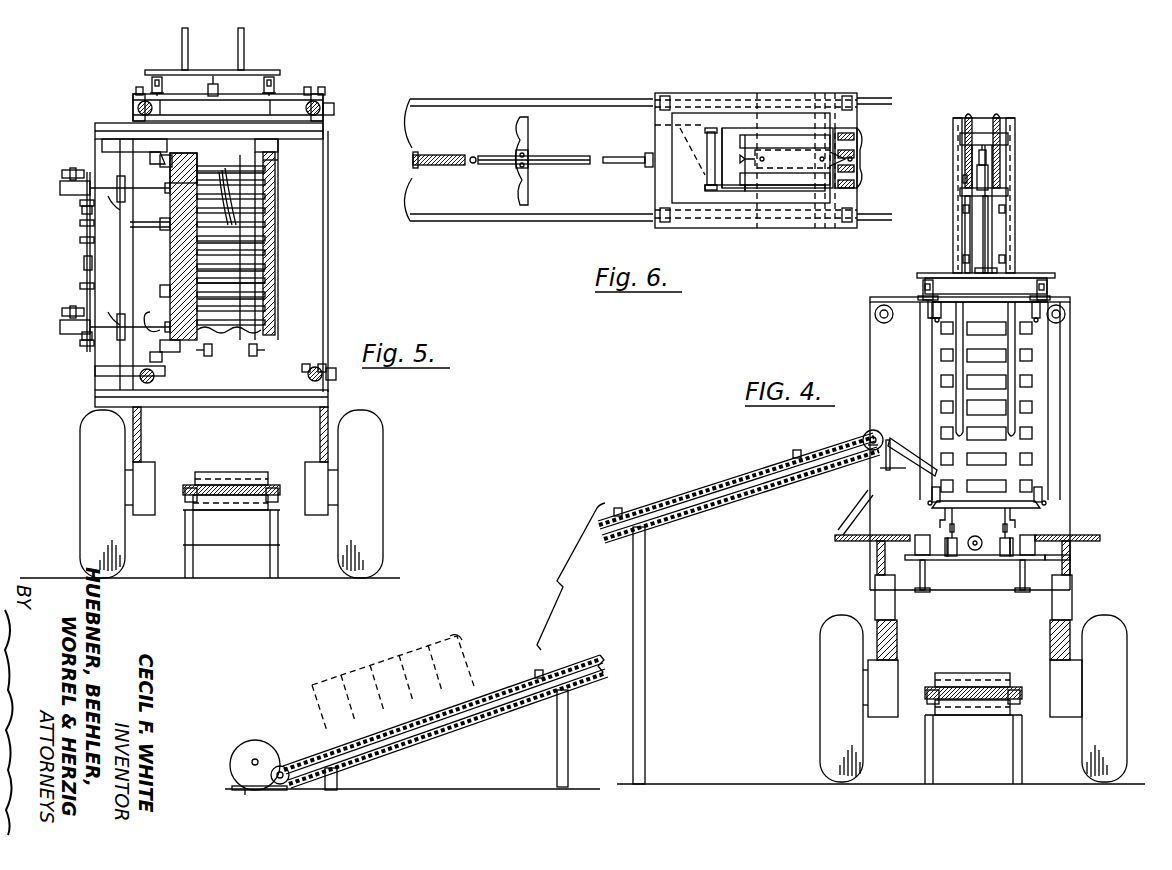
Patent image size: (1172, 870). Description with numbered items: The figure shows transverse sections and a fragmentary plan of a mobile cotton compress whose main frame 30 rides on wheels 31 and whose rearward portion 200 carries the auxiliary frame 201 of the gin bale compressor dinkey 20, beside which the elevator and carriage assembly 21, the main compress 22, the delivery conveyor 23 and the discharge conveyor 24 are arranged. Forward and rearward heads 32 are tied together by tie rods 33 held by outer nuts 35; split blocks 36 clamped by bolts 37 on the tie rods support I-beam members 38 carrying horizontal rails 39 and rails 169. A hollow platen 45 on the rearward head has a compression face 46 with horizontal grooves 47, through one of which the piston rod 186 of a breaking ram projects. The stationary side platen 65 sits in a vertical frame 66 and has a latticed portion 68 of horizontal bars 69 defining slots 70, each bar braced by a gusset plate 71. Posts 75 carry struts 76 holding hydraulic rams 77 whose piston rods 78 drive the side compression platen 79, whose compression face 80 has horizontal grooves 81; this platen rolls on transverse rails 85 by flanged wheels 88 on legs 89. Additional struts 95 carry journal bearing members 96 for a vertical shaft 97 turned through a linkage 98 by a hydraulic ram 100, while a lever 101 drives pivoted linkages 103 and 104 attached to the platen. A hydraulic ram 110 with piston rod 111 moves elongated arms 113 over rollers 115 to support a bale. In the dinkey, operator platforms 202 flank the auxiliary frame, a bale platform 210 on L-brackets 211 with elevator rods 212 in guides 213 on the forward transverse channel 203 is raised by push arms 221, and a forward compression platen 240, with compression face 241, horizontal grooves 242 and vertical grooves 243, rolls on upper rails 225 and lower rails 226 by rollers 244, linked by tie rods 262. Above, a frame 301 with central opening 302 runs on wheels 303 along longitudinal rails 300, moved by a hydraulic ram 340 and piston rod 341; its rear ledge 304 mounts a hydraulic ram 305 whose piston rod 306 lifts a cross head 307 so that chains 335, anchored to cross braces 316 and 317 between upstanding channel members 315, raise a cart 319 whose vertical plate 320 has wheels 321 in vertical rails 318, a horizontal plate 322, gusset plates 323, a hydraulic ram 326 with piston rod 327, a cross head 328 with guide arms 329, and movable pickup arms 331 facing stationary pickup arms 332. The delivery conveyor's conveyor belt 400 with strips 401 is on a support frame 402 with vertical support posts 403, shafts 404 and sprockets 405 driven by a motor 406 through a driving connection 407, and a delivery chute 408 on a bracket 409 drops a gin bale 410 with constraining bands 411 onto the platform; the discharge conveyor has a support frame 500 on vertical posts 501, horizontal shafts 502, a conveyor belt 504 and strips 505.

In FIG. 4, the gin bale compressor dinkey 20 is at (872, 376).
In FIG. 6, the elevator and carriage assembly 21 is at (855, 84).
In FIG. 4, the elevator and carriage assembly 21 is at (943, 143).
In FIG. 5, the main or principal compress 22 is at (297, 265).
In FIG. 4, the delivery conveyor 23 is at (614, 491).
In FIG. 5, the discharge conveyor 24 is at (175, 554).
In FIG. 4, the discharge conveyor 24 is at (998, 676).
In FIG. 5, the main frame 30 is at (141, 440).
In FIG. 4, the main frame 30 is at (880, 640).
In FIG. 5, the wheels 31 is at (90, 476).
In FIG. 4, the wheels 31 is at (832, 662).
In FIG. 5, the forward and rearward heads 32 is at (328, 232).
In FIG. 6, the forward and rearward heads 32 is at (525, 190).
In FIG. 4, the forward and rearward heads 32 is at (1072, 397).
In FIG. 5, the tie rods 33 is at (140, 105).
In FIG. 4, the tie rods 33 is at (875, 315).
In FIG. 4, the outer nuts 35 is at (878, 322).
In FIG. 5, the split blocks 36 is at (135, 97).
In FIG. 5, the bolts 37 is at (140, 88).
In FIG. 5, the I-beam members 38 is at (125, 128).
In FIG. 5, the horizontal rails 39 is at (165, 108).
In FIG. 5, the platen 45 is at (275, 182).
In FIG. 5, the compression face 46 is at (266, 268).
In FIG. 5, the horizontal grooves 47 is at (226, 187).
In FIG. 5, the stationary side platen 65 is at (292, 201).
In FIG. 5, the vertical frame 66 is at (282, 332).
In FIG. 5, the latticed portion 68 is at (265, 282).
In FIG. 5, the horizontal bars 69 is at (276, 222).
In FIG. 5, the slots 70 is at (276, 250).
In FIG. 5, the gusset plate 71 is at (275, 166).
In FIG. 5, the posts 75 is at (87, 262).
In FIG. 5, the struts 76 is at (110, 180).
In FIG. 5, the hydraulic rams 77 is at (60, 188).
In FIG. 5, the piston rods 78 is at (150, 189).
In FIG. 5, the side compression platen 79 is at (180, 152).
In FIG. 5, the compression face 80 is at (200, 160).
In FIG. 5, the horizontal grooves 81 is at (170, 282).
In FIG. 5, the transverse horizontal rails 85 is at (110, 146).
In FIG. 5, the flanged wheels 88 is at (150, 156).
In FIG. 5, the legs 89 is at (165, 160).
In FIG. 5, the additional struts 95 is at (80, 202).
In FIG. 5, the journal bearing members 96 is at (84, 208).
In FIG. 5, the vertical shaft 97 is at (85, 266).
In FIG. 5, the linkage 98 is at (65, 172).
In FIG. 5, the hydraulic ram 100 is at (72, 168).
In FIG. 5, the lever 101 is at (82, 222).
In FIG. 5, the pivoted linkage 103 is at (155, 330).
In FIG. 5, the pivoted linkage 104 is at (160, 272).
In FIG. 4, the hydraulic ram 110 is at (948, 542).
In FIG. 4, the piston rod 111 is at (1002, 546).
In FIG. 5, the elongated arms 113 is at (210, 352).
In FIG. 4, the elongated arms 113 is at (953, 557).
In FIG. 5, the rollers 115 is at (252, 356).
In FIG. 4, the rollers 115 is at (1007, 558).
In FIG. 5, the rails 169 is at (333, 110).
In FIG. 5, the piston rod 186 is at (276, 302).
In FIG. 4, the upwardly rearwardly extending portion 200 is at (877, 590).
In FIG. 4, the auxiliary frame 201 is at (905, 558).
In FIG. 4, the operator platforms 202 is at (1090, 535).
In FIG. 4, the forward transverse channel 203 is at (1068, 560).
In FIG. 4, the bale platform 210 is at (990, 499).
In FIG. 4, the L-brackets 211 is at (945, 517).
In FIG. 4, the elevator rods 212 is at (923, 592).
In FIG. 4, the guides 213 is at (915, 545).
In FIG. 4, the push arms 221 is at (988, 528).
In FIG. 4, the upper rails 225 is at (935, 298).
In FIG. 4, the lower rails 226 is at (985, 481).
In FIG. 4, the forward compression platen 240 is at (924, 352).
In FIG. 4, the compression face 241 is at (940, 383).
In FIG. 4, the horizontal grooves 242 is at (1025, 388).
In FIG. 4, the vertical grooves 243 is at (1035, 450).
In FIG. 4, the rollers 244 is at (930, 333).
In FIG. 4, the tie rods 262 is at (930, 307).
In FIG. 5, the longitudinal rails 300 is at (155, 85).
In FIG. 6, the longitudinal rails 300 is at (432, 191).
In FIG. 4, the longitudinal rails 300 is at (920, 298).
In FIG. 5, the frame 301 is at (272, 78).
In FIG. 6, the frame 301 is at (695, 93).
In FIG. 4, the frame 301 is at (925, 278).
In FIG. 6, the central opening 302 is at (728, 118).
In FIG. 5, the wheels 303 is at (160, 80).
In FIG. 6, the wheels 303 is at (665, 95).
In FIG. 4, the wheels 303 is at (925, 296).
In FIG. 4, the rear ledge 304 is at (1030, 274).
In FIG. 4, the hydraulic ram 305 is at (990, 201).
In FIG. 4, the piston rod 306 is at (990, 152).
In FIG. 6, the cross head 307 is at (858, 170).
In FIG. 4, the cross head 307 is at (996, 118).
In FIG. 5, the upstanding channel members 315 is at (243, 33).
In FIG. 6, the upstanding channel members 315 is at (858, 112).
In FIG. 4, the upstanding channel members 315 is at (955, 126).
In FIG. 6, the cross brace 316 is at (858, 176).
In FIG. 4, the cross brace 316 is at (1010, 138).
In FIG. 4, the cross brace 317 is at (1010, 192).
In FIG. 4, the vertical rails 318 is at (962, 178).
In FIG. 6, the cart 319 is at (801, 196).
In FIG. 4, the cart 319 is at (1003, 234).
In FIG. 6, the vertical plate 320 is at (832, 150).
In FIG. 4, the vertical plate 320 is at (965, 200).
In FIG. 4, the wheels 321 is at (958, 258).
In FIG. 6, the horizontal plate 322 is at (800, 125).
In FIG. 6, the gusset plates 323 is at (742, 188).
In FIG. 6, the hydraulic ram 326 is at (762, 212).
In FIG. 6, the piston rod 327 is at (725, 212).
In FIG. 6, the cross head 328 is at (707, 160).
In FIG. 6, the guide arms 329 is at (770, 130).
In FIG. 6, the movable pickup arms 331 is at (655, 125).
In FIG. 4, the movable pickup arms 331 is at (1018, 420).
In FIG. 6, the stationary pickup arms 332 is at (818, 130).
In FIG. 6, the chains 335 is at (792, 159).
In FIG. 4, the chains 335 is at (990, 156).
In FIG. 6, the hydraulic ram 340 is at (445, 156).
In FIG. 5, the piston rod 341 is at (215, 84).
In FIG. 6, the piston rod 341 is at (572, 157).
In FIG. 4, the conveyor belt 400 is at (724, 512).
In FIG. 4, the strips 401 is at (620, 510).
In FIG. 4, the support frame 402 is at (665, 520).
In FIG. 4, the vertical support posts 403 is at (645, 660).
In FIG. 4, the shafts 404 is at (866, 430).
In FIG. 4, the rollers or sprockets 405 is at (862, 440).
In FIG. 4, the motor 406 is at (250, 748).
In FIG. 4, the drive base 407 is at (240, 770).
In FIG. 4, the delivery chute 408 is at (905, 450).
In FIG. 4, the bracket 409 is at (888, 440).
In FIG. 4, the gin bale 410 is at (440, 642).
In FIG. 4, the constraining bands 411 is at (390, 658).
In FIG. 5, the support frame 500 is at (185, 488).
In FIG. 4, the support frame 500 is at (973, 693).
In FIG. 5, the vertical posts 501 is at (272, 555).
In FIG. 4, the vertical posts 501 is at (1015, 750).
In FIG. 5, the horizontal shafts 502 is at (230, 510).
In FIG. 4, the horizontal shafts 502 is at (970, 714).
In FIG. 5, the conveyor belt 504 is at (190, 500).
In FIG. 4, the conveyor belt 504 is at (930, 695).
In FIG. 5, the strips 505 is at (216, 474).
In FIG. 4, the strips 505 is at (962, 673).